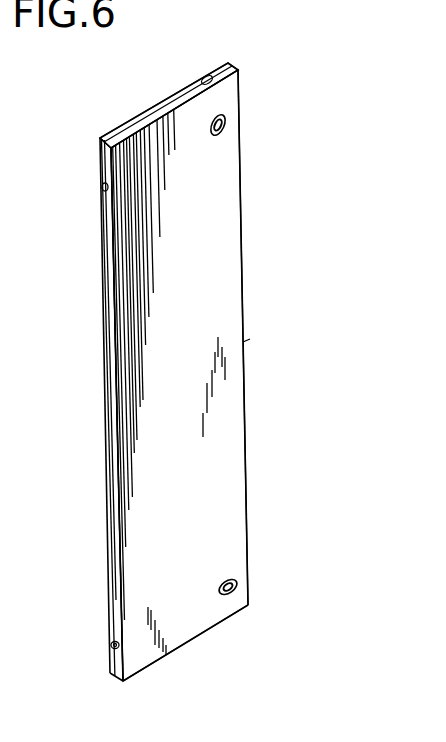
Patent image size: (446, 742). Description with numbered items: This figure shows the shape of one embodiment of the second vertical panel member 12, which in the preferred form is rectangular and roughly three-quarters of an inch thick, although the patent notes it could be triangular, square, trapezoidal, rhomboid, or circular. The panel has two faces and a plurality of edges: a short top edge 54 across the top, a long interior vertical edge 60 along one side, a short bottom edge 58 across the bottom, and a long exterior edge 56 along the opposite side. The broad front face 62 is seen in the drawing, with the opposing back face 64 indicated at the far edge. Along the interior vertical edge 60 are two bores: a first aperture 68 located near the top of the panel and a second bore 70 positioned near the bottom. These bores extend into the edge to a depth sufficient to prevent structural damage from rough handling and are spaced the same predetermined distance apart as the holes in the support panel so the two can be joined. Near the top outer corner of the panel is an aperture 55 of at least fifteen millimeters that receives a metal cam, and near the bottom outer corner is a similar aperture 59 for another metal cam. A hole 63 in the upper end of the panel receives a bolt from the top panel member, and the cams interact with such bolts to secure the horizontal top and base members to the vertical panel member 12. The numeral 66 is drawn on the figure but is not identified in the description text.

The second vertical panel member 12 is at (245, 58).
The short top edge 54 is at (155, 111).
The aperture 55 is at (224, 124).
The long exterior edge 56 is at (242, 232).
The short bottom edge 58 is at (197, 638).
The aperture 59 is at (236, 590).
The long interior vertical edge 60 is at (108, 417).
The front face 62 is at (228, 427).
The hole 63 is at (204, 77).
The back face 64 is at (247, 343).
The left front edge 66 is at (105, 253).
The first aperture 68 is at (102, 187).
The second bore 70 is at (111, 645).